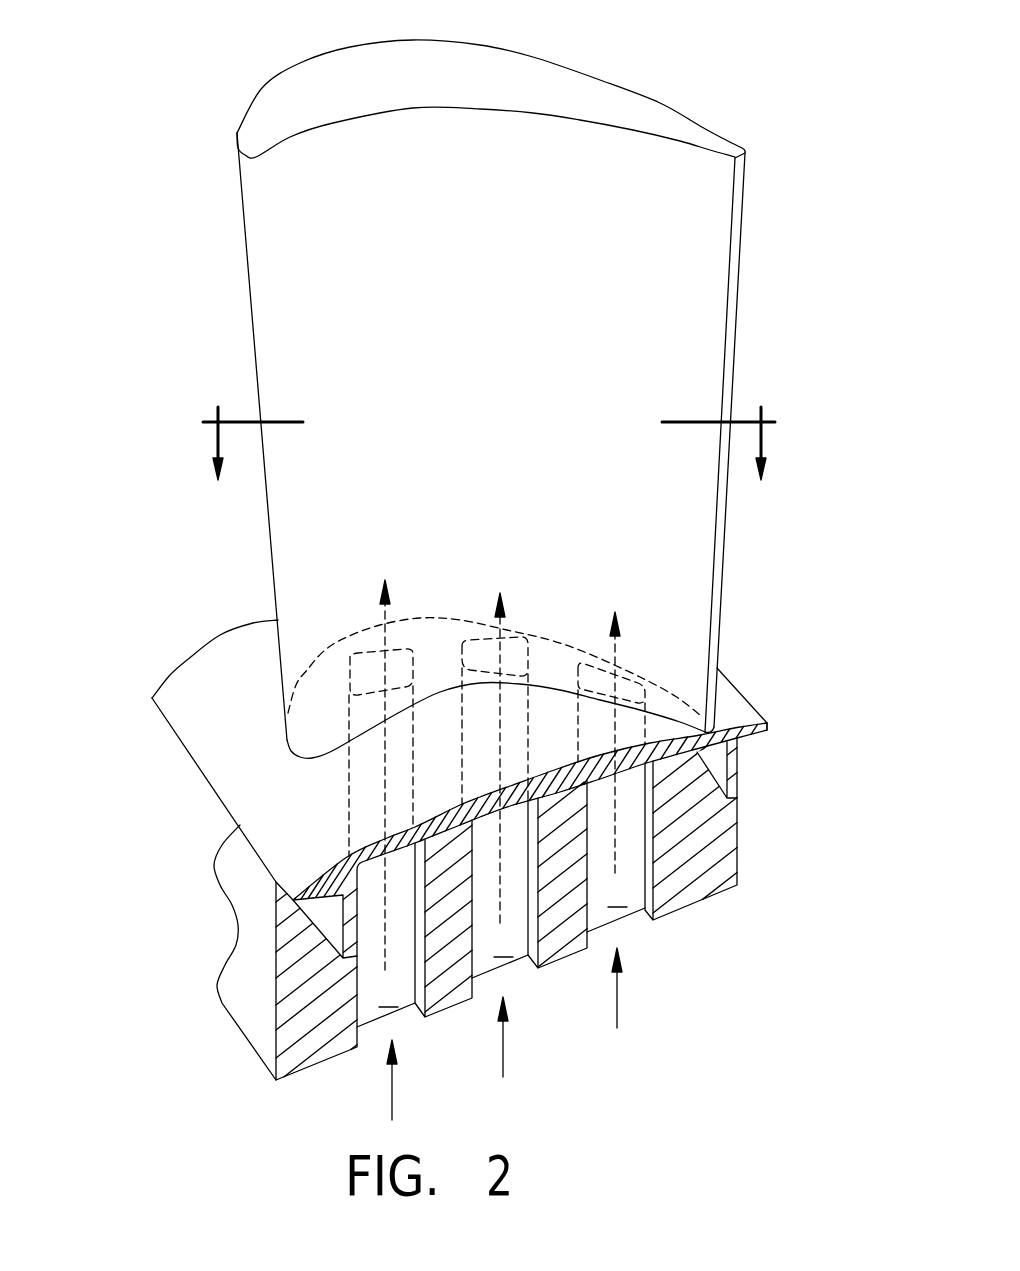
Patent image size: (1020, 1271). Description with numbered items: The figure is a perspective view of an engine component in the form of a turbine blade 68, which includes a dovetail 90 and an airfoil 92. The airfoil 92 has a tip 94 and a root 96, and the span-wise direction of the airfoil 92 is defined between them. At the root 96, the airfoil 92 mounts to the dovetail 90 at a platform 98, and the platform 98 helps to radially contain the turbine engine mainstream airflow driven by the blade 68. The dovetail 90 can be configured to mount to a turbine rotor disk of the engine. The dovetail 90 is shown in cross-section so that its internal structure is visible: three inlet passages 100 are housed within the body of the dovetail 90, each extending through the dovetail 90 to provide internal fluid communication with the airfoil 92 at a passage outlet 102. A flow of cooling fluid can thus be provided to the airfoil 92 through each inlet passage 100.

The turbine blade 68 is at (95, 100).
The dovetail 90 is at (253, 940).
The airfoil 92 is at (222, 346).
The tip 94 is at (343, 87).
The root 96 is at (667, 710).
The platform 98 is at (202, 668).
The inlet passage 100 is at (392, 1100).
The passage outlet 102 is at (365, 650).